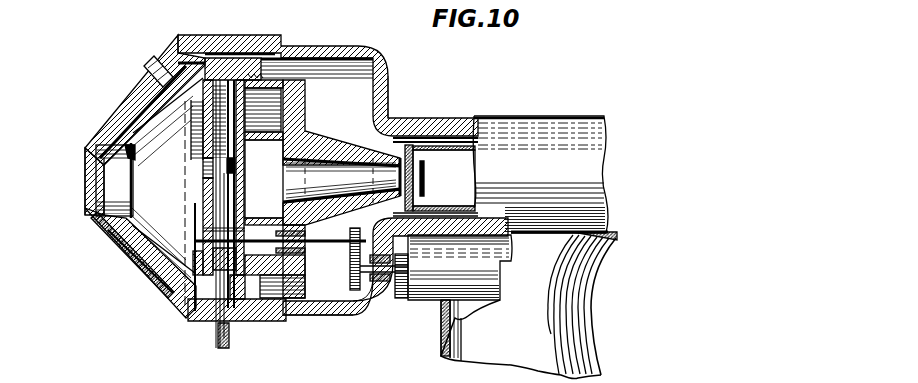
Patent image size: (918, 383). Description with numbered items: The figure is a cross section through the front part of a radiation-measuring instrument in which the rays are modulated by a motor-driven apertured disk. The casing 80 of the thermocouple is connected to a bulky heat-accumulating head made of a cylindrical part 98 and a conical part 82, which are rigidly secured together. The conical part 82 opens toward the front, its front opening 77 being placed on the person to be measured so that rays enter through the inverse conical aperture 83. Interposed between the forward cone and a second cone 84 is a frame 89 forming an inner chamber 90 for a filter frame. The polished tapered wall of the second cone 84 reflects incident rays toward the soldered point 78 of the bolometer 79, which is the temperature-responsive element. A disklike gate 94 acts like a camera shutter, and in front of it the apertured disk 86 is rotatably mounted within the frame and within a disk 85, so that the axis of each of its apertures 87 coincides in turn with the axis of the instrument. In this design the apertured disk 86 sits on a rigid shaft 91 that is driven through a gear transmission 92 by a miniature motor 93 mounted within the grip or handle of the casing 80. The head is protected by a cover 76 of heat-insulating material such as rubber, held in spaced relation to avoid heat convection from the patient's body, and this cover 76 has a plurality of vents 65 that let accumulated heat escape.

The vents 65 is at (144, 70).
The cover 76 is at (260, 37).
The front opening 77 is at (80, 157).
The soldered point 78 is at (432, 172).
The bolometer 79 is at (440, 140).
The casing 80 is at (540, 118).
The conical part 82 is at (120, 228).
The conical aperture 83 is at (95, 187).
The second cone 84 is at (377, 147).
The disk 85 is at (200, 78).
The apertured disk 86 is at (216, 326).
The apertures 87 is at (215, 170).
The frame 89 is at (258, 134).
The inner chamber 90 is at (297, 120).
The rigid shaft 91 is at (313, 241).
The gear transmission 92 is at (370, 300).
The motor 93 is at (422, 288).
The gate 94 is at (200, 78).
The cylindrical part 98 is at (295, 303).